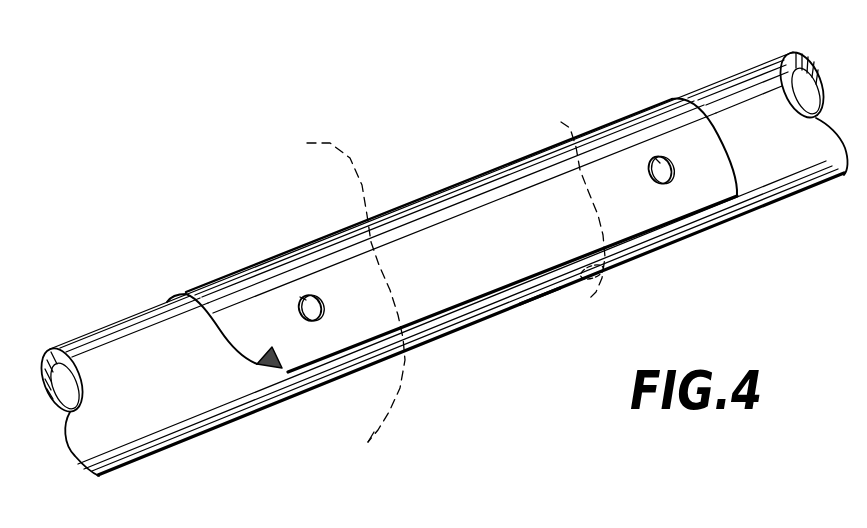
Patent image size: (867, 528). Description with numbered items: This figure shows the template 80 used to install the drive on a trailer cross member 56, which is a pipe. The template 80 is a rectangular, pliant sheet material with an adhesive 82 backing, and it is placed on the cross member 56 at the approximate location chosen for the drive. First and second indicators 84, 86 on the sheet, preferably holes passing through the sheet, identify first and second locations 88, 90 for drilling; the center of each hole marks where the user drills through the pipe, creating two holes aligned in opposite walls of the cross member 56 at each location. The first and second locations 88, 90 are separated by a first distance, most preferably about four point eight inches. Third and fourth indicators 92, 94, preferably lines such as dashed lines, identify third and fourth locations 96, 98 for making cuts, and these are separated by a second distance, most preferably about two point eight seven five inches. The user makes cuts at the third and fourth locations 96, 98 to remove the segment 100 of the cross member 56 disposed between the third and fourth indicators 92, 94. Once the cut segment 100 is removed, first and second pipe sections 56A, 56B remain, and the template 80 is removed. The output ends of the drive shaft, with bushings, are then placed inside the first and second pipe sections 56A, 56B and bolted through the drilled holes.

The cross member 56 is at (739, 96).
The first pipe section 56A is at (153, 428).
The second pipe section 56B is at (787, 193).
The template 80 is at (224, 272).
The adhesive 82 is at (273, 370).
The first indicator 84 is at (320, 296).
The second indicator 86 is at (650, 158).
The first location 88 is at (304, 298).
The second location 90 is at (660, 158).
The third indicator 92 is at (339, 285).
The fourth indicator 94 is at (561, 122).
The third location 96 is at (366, 443).
The fourth location 98 is at (578, 292).
The segment 100 is at (534, 297).